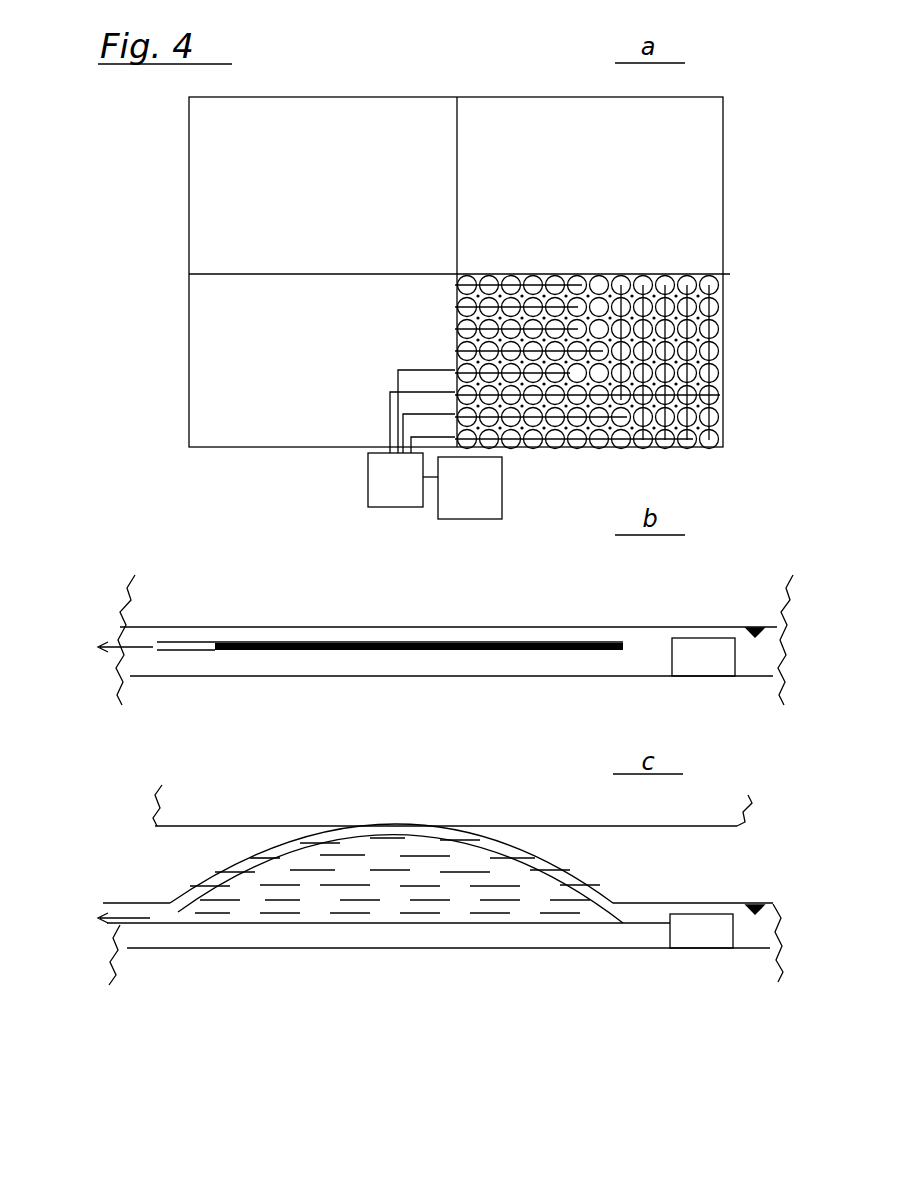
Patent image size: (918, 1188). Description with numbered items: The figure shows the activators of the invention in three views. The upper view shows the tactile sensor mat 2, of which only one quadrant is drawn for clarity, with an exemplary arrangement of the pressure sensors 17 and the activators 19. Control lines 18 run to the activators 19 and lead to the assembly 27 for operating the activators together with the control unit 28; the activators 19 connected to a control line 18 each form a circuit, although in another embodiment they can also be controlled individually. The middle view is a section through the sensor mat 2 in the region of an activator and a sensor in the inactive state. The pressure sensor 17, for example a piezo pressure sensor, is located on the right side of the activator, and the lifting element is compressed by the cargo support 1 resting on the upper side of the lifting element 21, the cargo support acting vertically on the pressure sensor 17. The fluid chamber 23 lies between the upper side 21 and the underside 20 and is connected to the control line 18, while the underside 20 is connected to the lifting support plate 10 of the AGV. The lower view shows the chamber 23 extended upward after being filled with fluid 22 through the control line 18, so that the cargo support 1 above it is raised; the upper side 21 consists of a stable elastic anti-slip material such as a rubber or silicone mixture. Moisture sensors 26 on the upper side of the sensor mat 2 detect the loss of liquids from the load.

The cargo support 1 is at (525, 610).
The tactile sensor mat 2 is at (280, 448).
The lifting support plate 10 is at (675, 695).
The pressure sensor 17 is at (715, 362).
The control line 18 is at (425, 392).
The activator 19 is at (600, 284).
The underside 20 is at (398, 667).
The upper side of the lifting element 21 is at (350, 635).
The fluid 22 is at (325, 885).
The fluid chamber 23 is at (437, 648).
The moisture sensor 26 is at (756, 638).
The assembly for operating the activators 27 is at (492, 495).
The control unit 28 is at (380, 478).